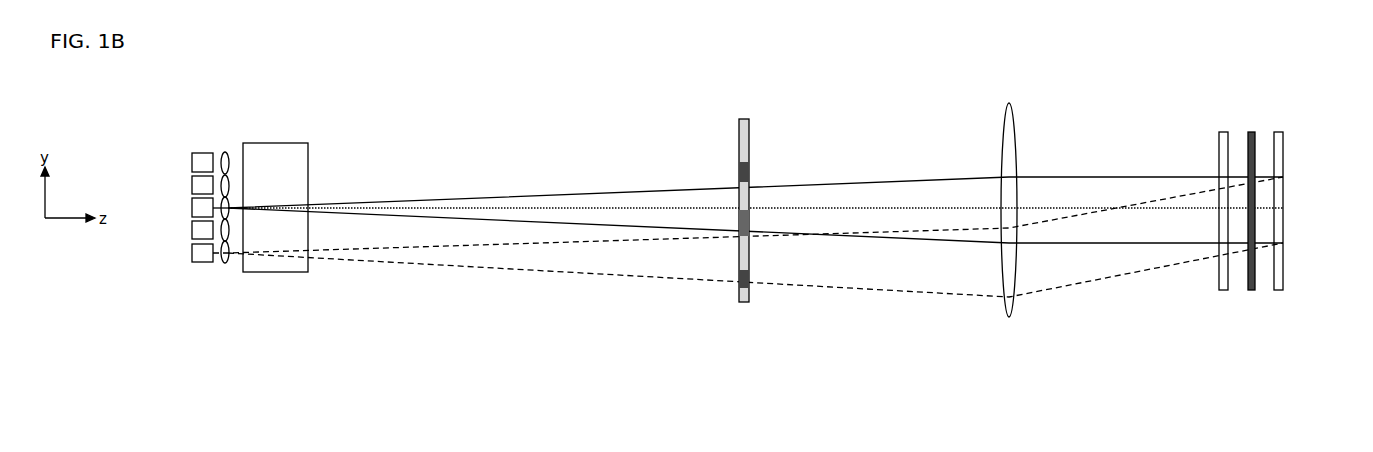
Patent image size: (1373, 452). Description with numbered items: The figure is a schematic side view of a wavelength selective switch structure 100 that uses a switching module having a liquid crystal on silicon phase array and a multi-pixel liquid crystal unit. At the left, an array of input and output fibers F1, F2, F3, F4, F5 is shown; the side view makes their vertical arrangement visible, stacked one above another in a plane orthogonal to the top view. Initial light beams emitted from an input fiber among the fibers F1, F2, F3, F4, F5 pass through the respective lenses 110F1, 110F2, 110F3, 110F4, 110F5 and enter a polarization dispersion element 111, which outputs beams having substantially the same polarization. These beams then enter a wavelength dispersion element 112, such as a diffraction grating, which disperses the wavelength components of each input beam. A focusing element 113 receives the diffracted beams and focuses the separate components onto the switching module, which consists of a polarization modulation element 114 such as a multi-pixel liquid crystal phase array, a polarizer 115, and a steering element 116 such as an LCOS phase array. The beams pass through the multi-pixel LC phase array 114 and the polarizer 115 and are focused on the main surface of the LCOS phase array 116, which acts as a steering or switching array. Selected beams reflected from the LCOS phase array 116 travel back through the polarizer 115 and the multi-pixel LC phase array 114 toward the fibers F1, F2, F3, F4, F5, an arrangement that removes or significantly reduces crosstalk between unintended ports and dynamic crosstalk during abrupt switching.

The wavelength selective switch structure 100 is at (523, 152).
The lens 110F1 is at (225, 152).
The lens 110F2 is at (229, 186).
The lens 110F3 is at (229, 211).
The lens 110F4 is at (229, 229).
The lens 110F5 is at (228, 246).
The polarization dispersion element 111 is at (308, 143).
The wavelength dispersion element 112 is at (747, 112).
The focusing element 113 is at (1007, 97).
The polarization modulation element 114 is at (1223, 131).
The polarizer 115 is at (1252, 131).
The steering element 116 is at (1279, 131).
The input and output fiber F1 is at (192, 158).
The input and output fiber F2 is at (192, 188).
The input and output fiber F3 is at (192, 209).
The input and output fiber F4 is at (192, 231).
The input and output fiber F5 is at (192, 253).